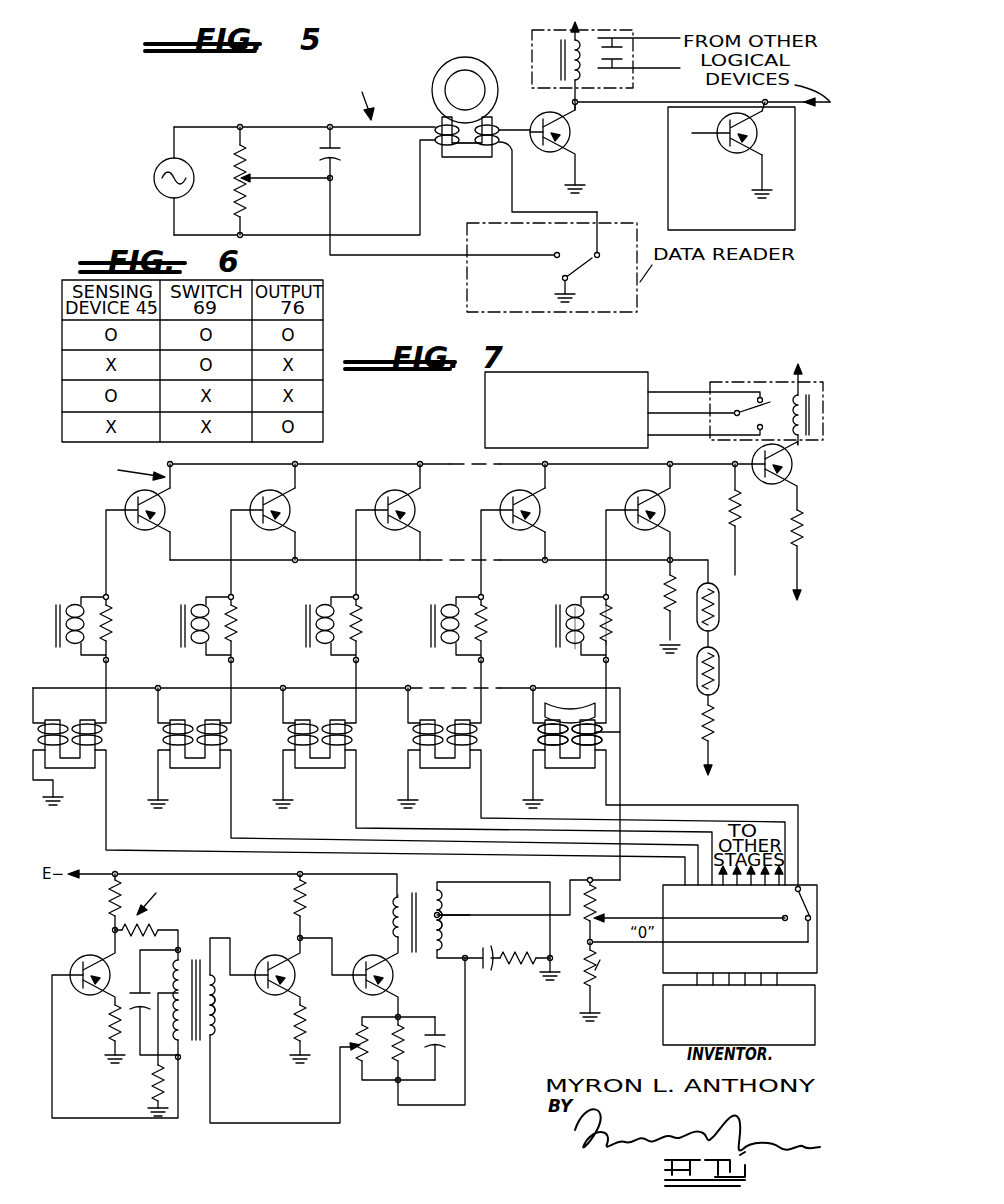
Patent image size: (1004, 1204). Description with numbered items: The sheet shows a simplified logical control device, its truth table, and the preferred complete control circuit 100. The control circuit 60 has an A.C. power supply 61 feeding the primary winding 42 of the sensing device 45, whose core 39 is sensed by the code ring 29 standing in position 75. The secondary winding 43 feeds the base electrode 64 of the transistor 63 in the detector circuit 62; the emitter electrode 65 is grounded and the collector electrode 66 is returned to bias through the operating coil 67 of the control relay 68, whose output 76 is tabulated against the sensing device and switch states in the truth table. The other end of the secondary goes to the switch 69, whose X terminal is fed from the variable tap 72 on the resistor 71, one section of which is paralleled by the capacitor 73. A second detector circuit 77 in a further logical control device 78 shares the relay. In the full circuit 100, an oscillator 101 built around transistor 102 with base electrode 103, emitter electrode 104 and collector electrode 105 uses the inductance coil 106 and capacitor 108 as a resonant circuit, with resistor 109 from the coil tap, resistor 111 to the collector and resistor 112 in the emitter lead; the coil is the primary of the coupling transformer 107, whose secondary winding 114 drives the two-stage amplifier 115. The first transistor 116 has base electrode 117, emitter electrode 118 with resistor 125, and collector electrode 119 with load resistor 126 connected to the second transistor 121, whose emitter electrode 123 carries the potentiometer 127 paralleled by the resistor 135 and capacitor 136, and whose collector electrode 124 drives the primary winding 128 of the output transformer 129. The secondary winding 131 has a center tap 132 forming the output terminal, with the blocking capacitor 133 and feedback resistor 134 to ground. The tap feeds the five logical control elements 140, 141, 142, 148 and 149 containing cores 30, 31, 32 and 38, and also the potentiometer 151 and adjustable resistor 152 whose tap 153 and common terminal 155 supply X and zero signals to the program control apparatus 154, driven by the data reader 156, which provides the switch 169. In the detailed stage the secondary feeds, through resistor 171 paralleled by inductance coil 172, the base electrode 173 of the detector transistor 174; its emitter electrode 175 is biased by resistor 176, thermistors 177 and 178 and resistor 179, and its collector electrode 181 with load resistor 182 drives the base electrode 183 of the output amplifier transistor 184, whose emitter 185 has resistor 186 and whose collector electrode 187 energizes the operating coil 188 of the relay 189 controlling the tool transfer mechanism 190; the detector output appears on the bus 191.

In FIG. 5, the code ring 29 is at (472, 58).
In FIG. 5, the sensing position 75 is at (461, 70).
In FIG. 5, the operating coil 67 is at (561, 30).
In FIG. 5, the control relay 68 is at (535, 45).
In FIG. 5, the control circuit 60 is at (358, 93).
In FIG. 5, the A.C. power supply 61 is at (167, 161).
In FIG. 5, the variable tap 72 is at (253, 178).
In FIG. 5, the resistor 71 is at (249, 200).
In FIG. 5, the capacitor 73 is at (341, 153).
In FIG. 5, the primary winding 42 is at (441, 127).
In FIG. 7, the primary winding 42 is at (538, 731).
In FIG. 5, the sensing device 45 is at (459, 163).
In FIG. 7, the sensing device 45 is at (535, 753).
In FIG. 5, the core 39 is at (478, 159).
In FIG. 7, the core 39 is at (581, 764).
In FIG. 5, the secondary winding 43 is at (503, 146).
In FIG. 7, the secondary winding 43 is at (602, 741).
In FIG. 5, the base electrode 64 is at (532, 126).
In FIG. 5, the output line 76 is at (572, 102).
In FIG. 5, the collector electrode 66 is at (569, 121).
In FIG. 5, the detector circuit 62 is at (572, 134).
In FIG. 5, the emitter electrode 65 is at (562, 147).
In FIG. 5, the transistor 63 is at (564, 190).
In FIG. 5, the switch 69 is at (580, 262).
In FIG. 5, the second detector circuit 77 is at (765, 143).
In FIG. 5, the logical control device 78 is at (795, 232).
In FIG. 7, the control circuit 100 is at (121, 470).
In FIG. 7, the detector output bus 191 is at (386, 462).
In FIG. 7, the tool transfer mechanism 190 is at (485, 410).
In FIG. 7, the relay 189 is at (753, 380).
In FIG. 7, the output amplifier transistor 184 is at (755, 456).
In FIG. 7, the operating coil 188 is at (792, 449).
In FIG. 7, the collector electrode 187 is at (790, 468).
In FIG. 7, the emitter 185 is at (788, 484).
In FIG. 7, the base electrode 183 is at (760, 486).
In FIG. 7, the resistor 186 is at (752, 545).
In FIG. 7, the load resistor 182 is at (780, 568).
In FIG. 7, the collector electrode 181 is at (665, 508).
In FIG. 7, the detector transistor 174 is at (652, 495).
In FIG. 7, the base electrode 173 is at (624, 510).
In FIG. 7, the emitter electrode 175 is at (666, 521).
In FIG. 7, the resistor 176 is at (666, 594).
In FIG. 7, the inductance coil 172 is at (577, 606).
In FIG. 7, the resistor 171 is at (609, 628).
In FIG. 7, the thermistor 177 is at (720, 623).
In FIG. 7, the thermistor 178 is at (720, 675).
In FIG. 7, the resistor 179 is at (712, 725).
In FIG. 7, the logical control element 140 is at (68, 602).
In FIG. 7, the logical control element 141 is at (158, 638).
In FIG. 7, the logical control element 142 is at (286, 638).
In FIG. 7, the logical control element 148 is at (413, 638).
In FIG. 7, the logical control element 149 is at (538, 638).
In FIG. 7, the core 30 is at (88, 764).
In FIG. 7, the core 31 is at (207, 764).
In FIG. 7, the core 32 is at (332, 764).
In FIG. 7, the core 38 is at (456, 764).
In FIG. 7, the switch 169 is at (796, 885).
In FIG. 7, the program control apparatus 154 is at (676, 885).
In FIG. 7, the tap 153 is at (602, 918).
In FIG. 7, the potentiometer 151 is at (528, 911).
In FIG. 7, the common terminal 155 is at (598, 950).
In FIG. 7, the adjustable resistor 152 is at (598, 982).
In FIG. 7, the data reader 156 is at (662, 1012).
In FIG. 7, the oscillator 101 is at (163, 895).
In FIG. 7, the collector electrode 105 is at (112, 898).
In FIG. 7, the transistor 102 is at (88, 955).
In FIG. 7, the base electrode 103 is at (76, 964).
In FIG. 7, the emitter electrode 104 is at (96, 992).
In FIG. 7, the resistor 111 is at (146, 924).
In FIG. 7, the inductance coil 106 is at (187, 958).
In FIG. 7, the capacitor 108 is at (144, 996).
In FIG. 7, the resistor 112 is at (110, 1027).
In FIG. 7, the resistor 109 is at (155, 1080).
In FIG. 7, the coupling transformer 107 is at (191, 1016).
In FIG. 7, the secondary winding 114 is at (216, 1030).
In FIG. 7, the first transistor 116 is at (272, 957).
In FIG. 7, the base electrode 117 is at (250, 992).
In FIG. 7, the emitter electrode 118 is at (292, 988).
In FIG. 7, the collector electrode 119 is at (296, 966).
In FIG. 7, the resistor 125 is at (305, 1024).
In FIG. 7, the load resistor 126 is at (304, 905).
In FIG. 7, the primary winding 128 is at (396, 904).
In FIG. 7, the two-stage amplifier 115 is at (380, 926).
In FIG. 7, the second transistor 121 is at (368, 956).
In FIG. 7, the output transformer 129 is at (414, 888).
In FIG. 7, the secondary winding 131 is at (442, 905).
In FIG. 7, the center tap 132 is at (446, 919).
In FIG. 7, the blocking capacitor 133 is at (487, 969).
In FIG. 7, the feedback resistor 134 is at (520, 968).
In FIG. 7, the collector electrode 124 is at (392, 967).
In FIG. 7, the emitter electrode 123 is at (393, 989).
In FIG. 7, the capacitor 136 is at (438, 1033).
In FIG. 7, the potentiometer 127 is at (366, 1082).
In FIG. 7, the resistor 135 is at (401, 1078).